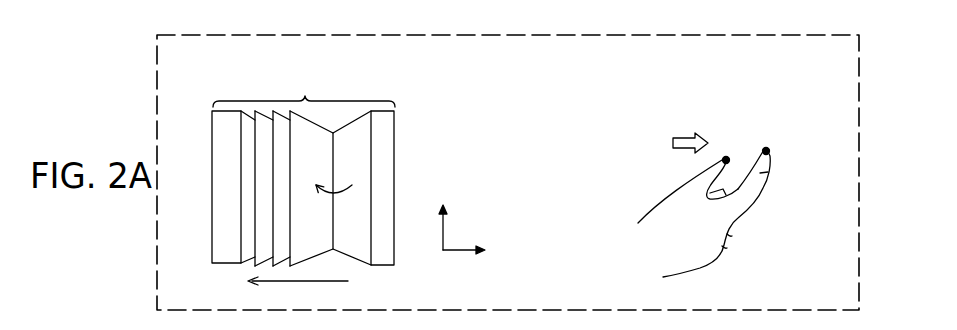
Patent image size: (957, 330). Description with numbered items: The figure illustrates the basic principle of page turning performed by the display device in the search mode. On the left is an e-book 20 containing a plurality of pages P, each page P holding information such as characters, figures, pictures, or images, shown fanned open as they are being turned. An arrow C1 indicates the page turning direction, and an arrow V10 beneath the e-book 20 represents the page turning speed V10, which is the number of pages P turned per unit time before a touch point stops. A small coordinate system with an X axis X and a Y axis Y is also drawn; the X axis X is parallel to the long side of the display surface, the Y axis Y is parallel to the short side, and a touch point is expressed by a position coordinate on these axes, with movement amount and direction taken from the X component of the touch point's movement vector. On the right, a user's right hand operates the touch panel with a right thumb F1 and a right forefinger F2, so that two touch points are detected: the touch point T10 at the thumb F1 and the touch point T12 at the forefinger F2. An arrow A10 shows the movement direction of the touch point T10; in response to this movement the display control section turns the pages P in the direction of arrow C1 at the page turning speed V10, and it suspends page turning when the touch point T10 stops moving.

The e-book 20 is at (394, 158).
The pages P is at (304, 85).
The arrow indicating page turning direction C1 is at (340, 203).
The page turning speed V10 is at (340, 281).
The arrow indicating movement of touch point A10 is at (680, 136).
The right thumb F1 is at (713, 167).
The right forefinger F2 is at (770, 173).
The touch point T10 is at (726, 157).
The touch point T12 is at (767, 148).
The X axis X is at (473, 245).
The Y axis Y is at (444, 211).